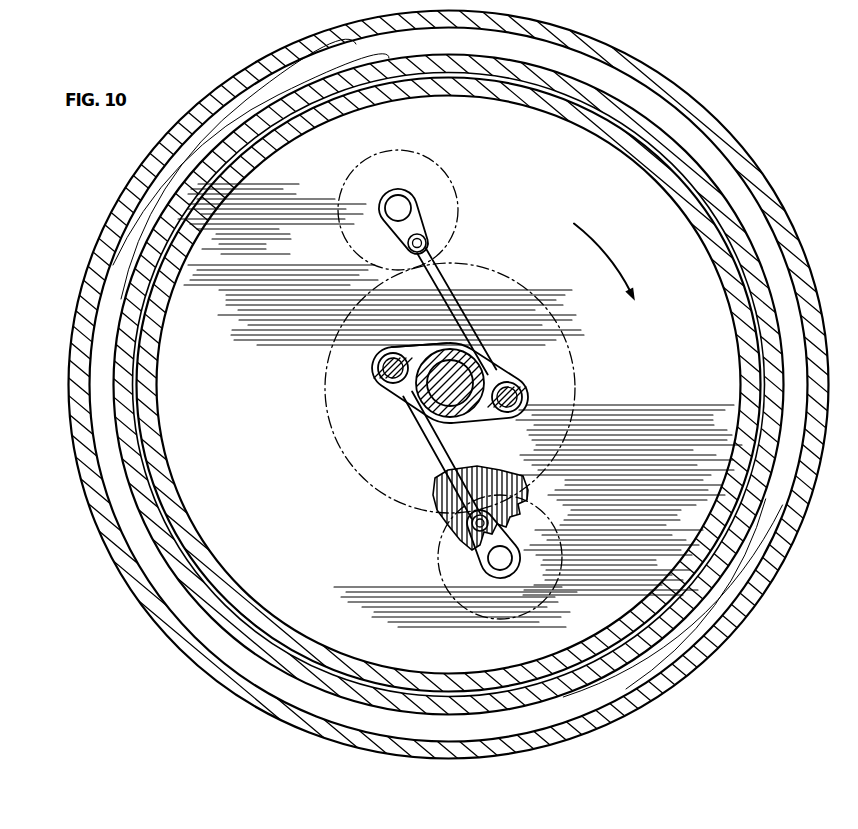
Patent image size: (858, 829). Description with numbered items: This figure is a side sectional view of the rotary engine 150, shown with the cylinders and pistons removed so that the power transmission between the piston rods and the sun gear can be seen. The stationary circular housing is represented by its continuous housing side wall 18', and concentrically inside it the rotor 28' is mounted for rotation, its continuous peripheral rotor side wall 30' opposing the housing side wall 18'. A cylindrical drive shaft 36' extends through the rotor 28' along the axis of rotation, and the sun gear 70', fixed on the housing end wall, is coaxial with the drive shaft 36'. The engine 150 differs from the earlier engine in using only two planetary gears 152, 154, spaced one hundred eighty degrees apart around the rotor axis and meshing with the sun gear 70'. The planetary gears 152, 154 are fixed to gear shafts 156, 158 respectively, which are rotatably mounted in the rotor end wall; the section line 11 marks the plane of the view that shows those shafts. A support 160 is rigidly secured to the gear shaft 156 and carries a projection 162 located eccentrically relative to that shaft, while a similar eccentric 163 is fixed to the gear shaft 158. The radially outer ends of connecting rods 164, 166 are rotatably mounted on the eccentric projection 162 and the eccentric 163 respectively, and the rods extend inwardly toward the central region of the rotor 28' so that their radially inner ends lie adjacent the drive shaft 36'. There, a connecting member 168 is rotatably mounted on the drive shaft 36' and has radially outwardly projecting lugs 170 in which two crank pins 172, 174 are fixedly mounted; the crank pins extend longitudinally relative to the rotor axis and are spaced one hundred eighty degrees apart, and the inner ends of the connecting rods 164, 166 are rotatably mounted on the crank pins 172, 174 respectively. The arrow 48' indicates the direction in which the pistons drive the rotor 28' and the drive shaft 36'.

The rotary engine 150 is at (731, 79).
The housing side wall 18' is at (429, 414).
The rotor 28' is at (449, 385).
The rotor peripheral side wall 30' is at (429, 414).
The direction arrow 48' is at (606, 262).
The section line 11 is at (355, 144).
The planetary gear 152 is at (452, 176).
The planetary gear 154 is at (557, 536).
The gear shaft 156 is at (400, 197).
The gear shaft 158 is at (490, 562).
The support 160 is at (392, 228).
The projection 162 is at (428, 243).
The eccentric 163 is at (470, 528).
The connecting rod 164 is at (443, 290).
The connecting rod 166 is at (418, 415).
The connecting member 168 is at (420, 360).
The lugs 170 is at (424, 353).
The crank pin 172 is at (514, 390).
The crank pin 174 is at (383, 367).
The drive shaft 36' is at (478, 369).
The sun gear 70' is at (450, 388).